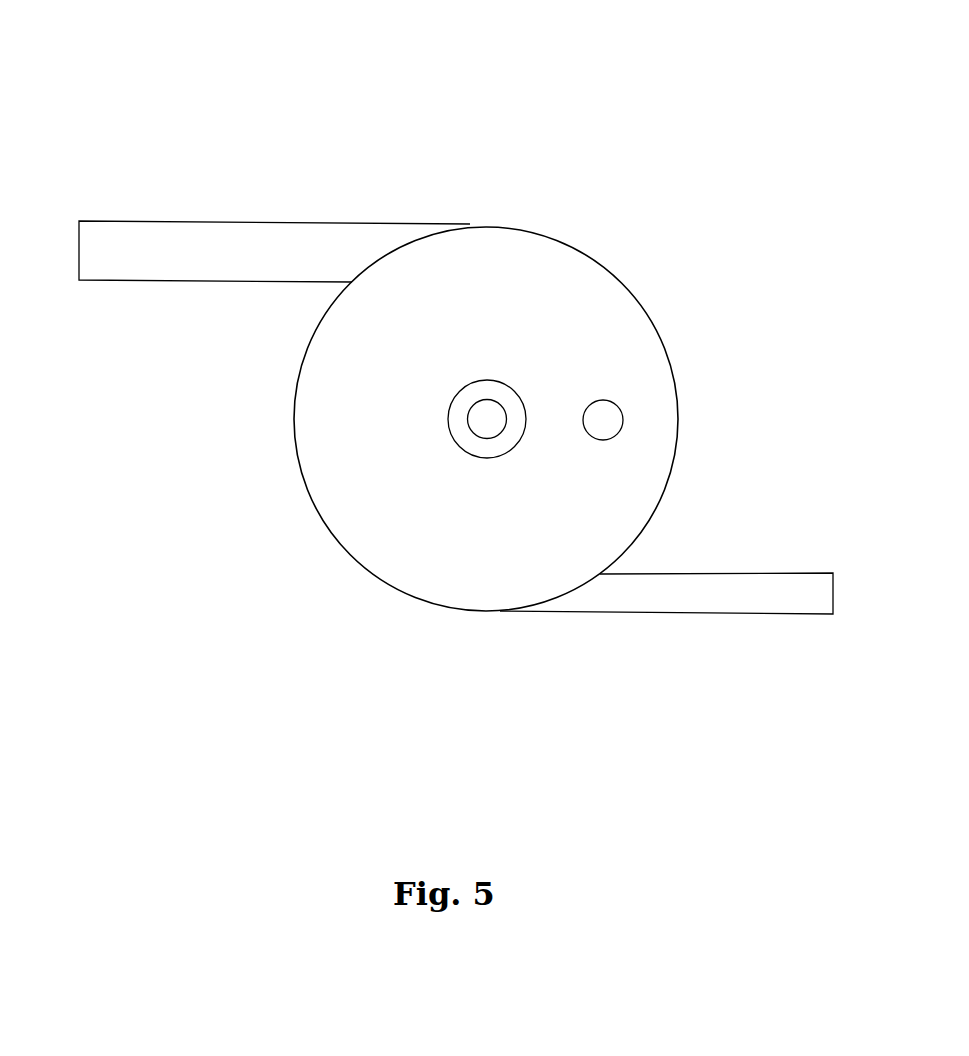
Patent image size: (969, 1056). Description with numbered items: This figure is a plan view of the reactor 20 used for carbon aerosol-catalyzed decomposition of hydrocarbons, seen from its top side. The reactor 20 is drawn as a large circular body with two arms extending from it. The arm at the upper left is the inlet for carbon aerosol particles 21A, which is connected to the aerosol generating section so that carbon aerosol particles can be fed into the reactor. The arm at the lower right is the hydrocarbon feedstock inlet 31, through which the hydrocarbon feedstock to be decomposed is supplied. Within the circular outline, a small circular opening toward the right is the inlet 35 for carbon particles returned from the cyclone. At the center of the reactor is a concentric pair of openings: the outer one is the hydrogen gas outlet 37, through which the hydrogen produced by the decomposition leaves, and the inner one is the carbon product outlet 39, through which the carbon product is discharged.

The reactor 20 is at (651, 180).
The inlet for carbon aerosol particles 21A is at (177, 230).
The hydrocarbon feedstock inlet 31 is at (678, 582).
The inlet for carbon particles from the cyclone 35 is at (607, 410).
The hydrogen gas outlet 37 is at (448, 426).
The carbon product outlet 39 is at (486, 427).